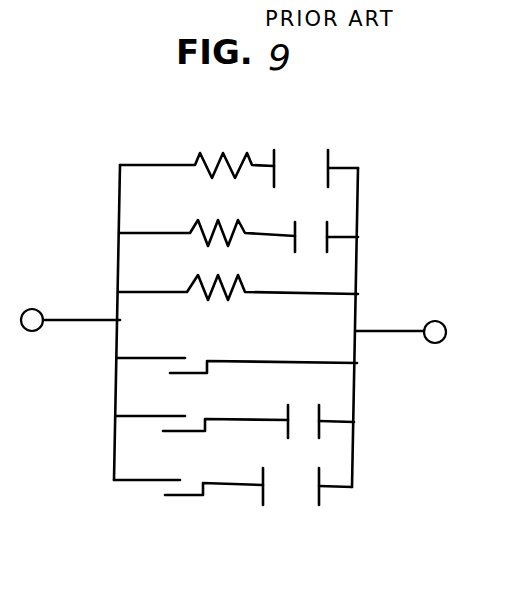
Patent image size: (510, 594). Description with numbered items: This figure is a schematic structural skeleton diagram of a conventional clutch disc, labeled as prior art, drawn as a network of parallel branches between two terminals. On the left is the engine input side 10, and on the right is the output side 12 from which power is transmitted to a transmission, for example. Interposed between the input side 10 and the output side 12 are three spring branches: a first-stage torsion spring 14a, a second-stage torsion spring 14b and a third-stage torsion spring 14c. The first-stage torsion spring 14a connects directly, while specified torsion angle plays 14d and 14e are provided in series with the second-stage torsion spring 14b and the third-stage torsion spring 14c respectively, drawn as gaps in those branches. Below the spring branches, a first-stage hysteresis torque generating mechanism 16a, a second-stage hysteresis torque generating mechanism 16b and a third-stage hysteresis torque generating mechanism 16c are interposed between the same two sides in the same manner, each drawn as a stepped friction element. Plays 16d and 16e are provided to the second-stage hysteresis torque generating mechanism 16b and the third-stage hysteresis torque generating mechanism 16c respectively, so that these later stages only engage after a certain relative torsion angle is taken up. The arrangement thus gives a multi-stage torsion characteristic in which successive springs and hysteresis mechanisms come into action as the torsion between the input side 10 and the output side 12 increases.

The engine input side 10 is at (58, 330).
The output side 12 is at (405, 328).
The first-stage torsion spring 14a is at (228, 300).
The second-stage torsion spring 14b is at (190, 232).
The third-stage torsion spring 14c is at (197, 165).
The torsion angle play 14d is at (311, 238).
The torsion angle play 14e is at (300, 170).
The first-stage hysteresis torque generating mechanism 16a is at (175, 355).
The second-stage hysteresis torque generating mechanism 16b is at (185, 436).
The third-stage hysteresis torque generating mechanism 16c is at (177, 497).
The play 16d is at (303, 420).
The play 16e is at (290, 492).